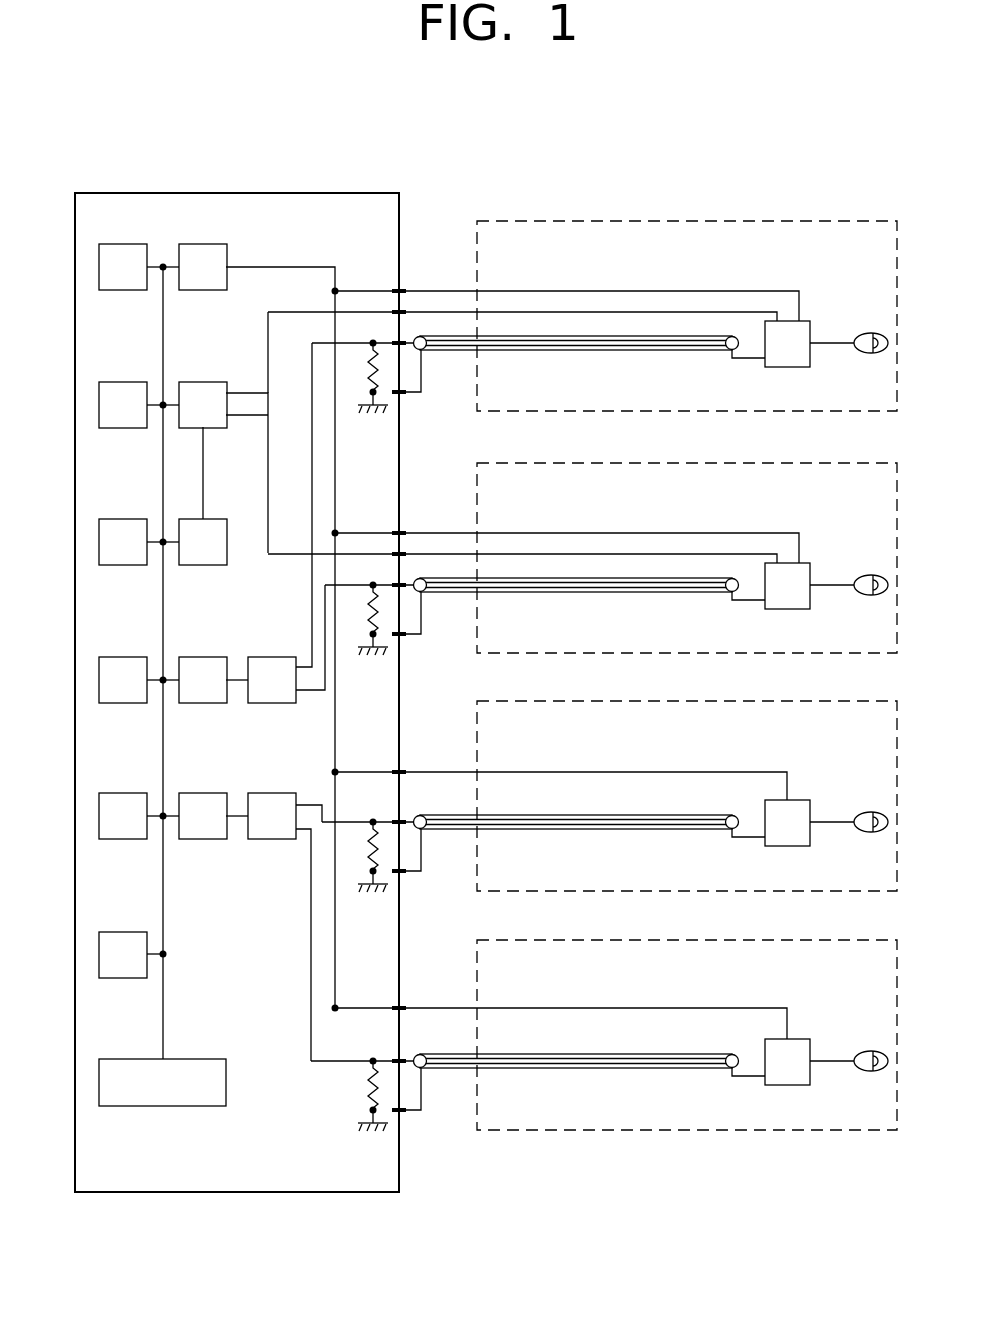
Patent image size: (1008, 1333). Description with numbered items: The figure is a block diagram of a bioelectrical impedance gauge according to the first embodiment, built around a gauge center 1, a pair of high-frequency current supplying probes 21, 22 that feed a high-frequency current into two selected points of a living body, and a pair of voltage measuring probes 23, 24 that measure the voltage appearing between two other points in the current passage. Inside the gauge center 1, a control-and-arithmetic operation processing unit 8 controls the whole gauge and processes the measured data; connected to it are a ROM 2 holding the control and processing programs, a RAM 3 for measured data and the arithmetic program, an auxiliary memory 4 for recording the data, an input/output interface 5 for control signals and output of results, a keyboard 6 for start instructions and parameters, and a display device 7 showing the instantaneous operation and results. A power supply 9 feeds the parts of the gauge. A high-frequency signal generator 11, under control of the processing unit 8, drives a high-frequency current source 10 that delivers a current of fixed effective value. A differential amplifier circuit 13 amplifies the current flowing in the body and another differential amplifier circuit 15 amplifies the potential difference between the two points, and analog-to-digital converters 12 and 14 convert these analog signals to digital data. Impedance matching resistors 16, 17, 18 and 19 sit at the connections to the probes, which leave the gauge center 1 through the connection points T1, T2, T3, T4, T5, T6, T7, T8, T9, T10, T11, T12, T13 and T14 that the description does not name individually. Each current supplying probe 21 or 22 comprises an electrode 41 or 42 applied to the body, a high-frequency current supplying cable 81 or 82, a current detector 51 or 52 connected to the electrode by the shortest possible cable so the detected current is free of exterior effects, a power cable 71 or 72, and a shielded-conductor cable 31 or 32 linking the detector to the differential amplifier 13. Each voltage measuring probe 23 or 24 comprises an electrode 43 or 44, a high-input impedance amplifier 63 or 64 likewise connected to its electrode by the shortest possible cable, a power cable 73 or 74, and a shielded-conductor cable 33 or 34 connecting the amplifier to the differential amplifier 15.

The gauge center 1 is at (327, 190).
The ROM 2 is at (132, 284).
The RAM 3 is at (132, 422).
The auxiliary memory 4 is at (132, 559).
The input/output interface 5 is at (132, 697).
The keyboard 6 is at (132, 833).
The display device 7 is at (132, 972).
The control-and-arithmetic operation processing unit 8 is at (171, 1099).
The power supply 9 is at (212, 284).
The high-frequency current source 10 is at (222, 422).
The high-frequency signal generator 11 is at (222, 559).
The analog-to-digital converter 12 is at (222, 697).
The differential amplifier circuit 13 is at (291, 697).
The analog-to-digital converter 14 is at (222, 833).
The differential amplifier circuit 15 is at (291, 833).
The impedance matching resistor 16 is at (370, 365).
The impedance matching resistor 17 is at (370, 607).
The impedance matching resistor 18 is at (370, 844).
The impedance matching resistor 19 is at (366, 1090).
The high-frequency current supplying probe 21 is at (756, 216).
The high-frequency current supplying probe 22 is at (756, 458).
The voltage measuring probe 23 is at (756, 696).
The voltage measuring probe 24 is at (756, 935).
The shielded-conductor cable 31 is at (594, 351).
The shielded-conductor cable 32 is at (594, 593).
The shielded-conductor cable 33 is at (594, 830).
The shielded-conductor cable 34 is at (594, 1069).
The electrode 41 is at (872, 333).
The electrode 42 is at (872, 575).
The electrode 43 is at (872, 812).
The electrode 44 is at (872, 1051).
The current detector 51 is at (807, 361).
The current detector 52 is at (807, 603).
The high-input impedance amplifier 63 is at (807, 840).
The high-input impedance amplifier 64 is at (807, 1079).
The power cable 71 is at (527, 290).
The power cable 72 is at (527, 532).
The power cable 73 is at (527, 771).
The power cable 74 is at (527, 1007).
The high-frequency current supplying cable 81 is at (590, 310).
The high-frequency current supplying cable 82 is at (590, 552).
The terminal T1 is at (400, 290).
The terminal T2 is at (398, 311).
The terminal T3 is at (398, 342).
The terminal T4 is at (401, 393).
The terminal T5 is at (400, 532).
The terminal T6 is at (398, 553).
The terminal T7 is at (398, 584).
The terminal T8 is at (401, 635).
The terminal T9 is at (400, 771).
The terminal T10 is at (400, 821).
The terminal T11 is at (401, 872).
The terminal T12 is at (400, 1007).
The terminal T13 is at (400, 1060).
The terminal T14 is at (401, 1111).